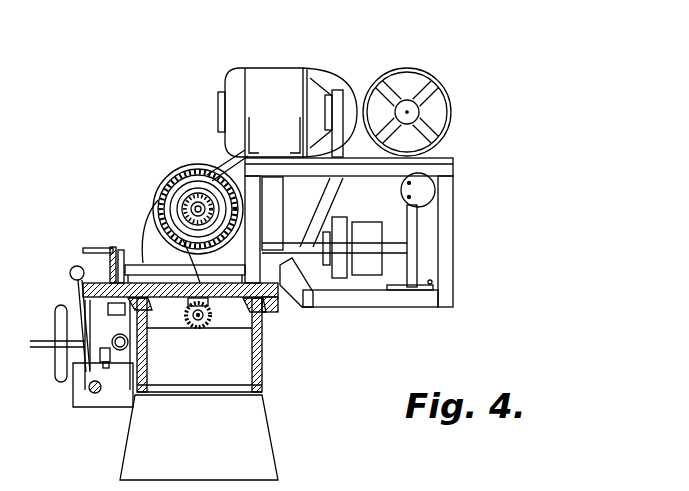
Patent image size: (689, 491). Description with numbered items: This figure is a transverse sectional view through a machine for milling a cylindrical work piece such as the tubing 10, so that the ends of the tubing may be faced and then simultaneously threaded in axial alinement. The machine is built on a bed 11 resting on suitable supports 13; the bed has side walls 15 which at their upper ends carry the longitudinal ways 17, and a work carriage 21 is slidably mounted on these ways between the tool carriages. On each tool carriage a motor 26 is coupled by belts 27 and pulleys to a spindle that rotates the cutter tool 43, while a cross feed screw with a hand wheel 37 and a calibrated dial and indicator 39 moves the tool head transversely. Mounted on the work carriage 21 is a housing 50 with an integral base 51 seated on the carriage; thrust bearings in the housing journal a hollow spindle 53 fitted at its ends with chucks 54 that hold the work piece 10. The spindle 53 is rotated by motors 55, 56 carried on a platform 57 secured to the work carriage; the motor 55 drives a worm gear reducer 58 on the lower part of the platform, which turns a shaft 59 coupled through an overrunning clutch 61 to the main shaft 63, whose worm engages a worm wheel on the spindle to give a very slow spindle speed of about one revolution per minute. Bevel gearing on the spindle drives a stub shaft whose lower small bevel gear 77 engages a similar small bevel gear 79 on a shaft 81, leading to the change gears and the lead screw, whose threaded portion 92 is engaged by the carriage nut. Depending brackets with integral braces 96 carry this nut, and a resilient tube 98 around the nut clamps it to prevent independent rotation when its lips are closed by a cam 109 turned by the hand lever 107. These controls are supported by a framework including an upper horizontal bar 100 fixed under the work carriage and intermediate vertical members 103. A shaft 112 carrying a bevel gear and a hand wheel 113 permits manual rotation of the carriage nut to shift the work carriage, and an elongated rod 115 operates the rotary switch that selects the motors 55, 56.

The tubing 10 is at (190, 214).
The bed 11 is at (263, 371).
The supports 13 is at (245, 422).
The side walls 15 is at (250, 338).
The ways 17 is at (187, 301).
The work carriage 21 is at (203, 278).
The motor 26 is at (318, 76).
The belts 27 is at (238, 158).
The hand wheels 37 is at (112, 252).
The dial and indicator 39 is at (118, 248).
The cutter tool 43 is at (182, 237).
The housing 50 is at (168, 195).
The base 51 is at (157, 278).
The hollow spindle 53 is at (185, 209).
The chucks 54 is at (190, 168).
The motor 55 is at (430, 82).
The motor 56 is at (265, 70).
The platform 57 is at (297, 168).
The worm gear reducer 58 is at (425, 238).
The shaft 59 is at (386, 250).
The overrunning clutch 61 is at (363, 228).
The main shaft 63 is at (289, 247).
The small bevel gear 77 is at (211, 307).
The small bevel gear 79 is at (186, 318).
The shaft 81 is at (210, 320).
The threaded portion 92 is at (110, 354).
The braces 96 is at (102, 325).
The tube 98 is at (128, 348).
The upper horizontal bar 100 is at (80, 300).
The intermediate vertical members 103 is at (82, 402).
The hand lever 107 is at (70, 273).
The cam 109 is at (106, 366).
The shaft 112 is at (60, 340).
The hand wheel 113 is at (58, 315).
The elongated rod 115 is at (88, 388).